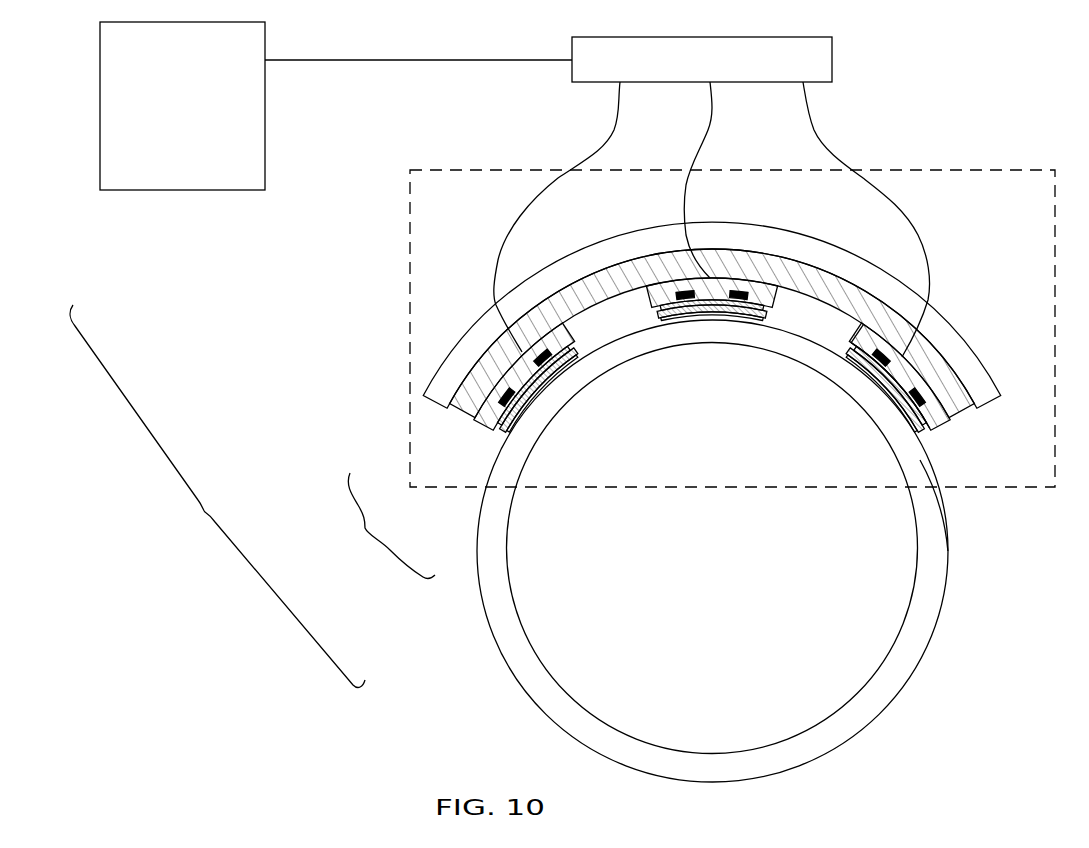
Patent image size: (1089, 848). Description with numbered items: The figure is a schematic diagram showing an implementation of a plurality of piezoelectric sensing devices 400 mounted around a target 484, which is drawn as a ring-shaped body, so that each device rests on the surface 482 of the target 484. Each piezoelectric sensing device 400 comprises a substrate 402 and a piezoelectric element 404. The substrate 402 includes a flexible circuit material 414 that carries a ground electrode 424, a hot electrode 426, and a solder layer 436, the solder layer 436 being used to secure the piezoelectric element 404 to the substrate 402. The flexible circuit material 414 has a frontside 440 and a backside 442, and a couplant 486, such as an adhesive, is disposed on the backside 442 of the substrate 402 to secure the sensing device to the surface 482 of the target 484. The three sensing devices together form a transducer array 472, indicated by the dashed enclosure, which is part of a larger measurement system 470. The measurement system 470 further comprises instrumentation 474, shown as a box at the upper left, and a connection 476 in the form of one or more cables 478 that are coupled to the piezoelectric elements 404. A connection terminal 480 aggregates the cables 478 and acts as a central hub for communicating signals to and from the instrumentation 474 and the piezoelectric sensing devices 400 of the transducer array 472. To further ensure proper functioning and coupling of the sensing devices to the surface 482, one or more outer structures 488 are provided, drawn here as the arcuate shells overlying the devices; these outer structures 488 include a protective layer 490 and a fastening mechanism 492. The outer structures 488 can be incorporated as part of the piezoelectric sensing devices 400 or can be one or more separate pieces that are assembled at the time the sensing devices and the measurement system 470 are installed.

The piezoelectric sensing device 400 is at (591, 400).
The substrate 402 is at (842, 326).
The piezoelectric element 404 is at (933, 438).
The flexible circuit material 414 is at (943, 428).
The ground electrode 424 is at (932, 393).
The hot electrode 426 is at (885, 347).
The solder layer 436 is at (935, 436).
The frontside 440 is at (930, 383).
The backside 442 is at (940, 456).
The measurement system 470 is at (217, 496).
The transducer array 472 is at (1000, 170).
The instrumentation 474 is at (265, 135).
The connection 476 is at (936, 106).
The cables 478 is at (617, 118).
The connection terminal 480 is at (832, 62).
The surface 482 is at (898, 692).
The target 484 is at (817, 748).
The couplant 486 is at (830, 342).
The outer structures 488 is at (378, 525).
The protective layer 490 is at (460, 410).
The fastening mechanism 492 is at (440, 387).